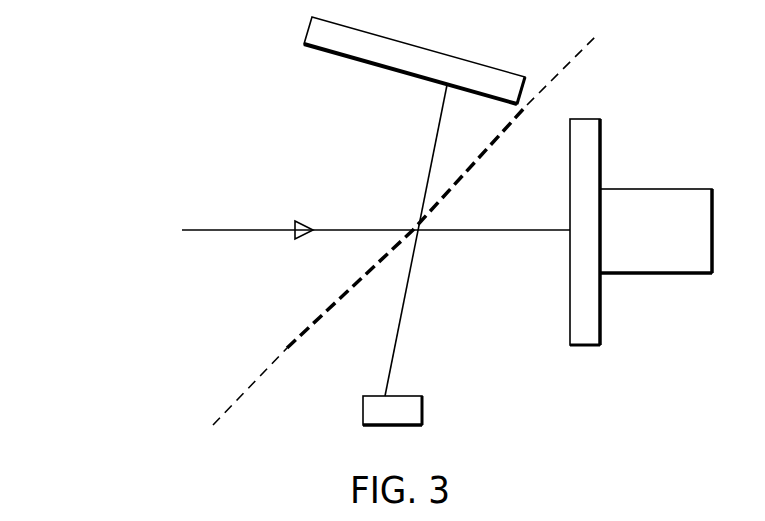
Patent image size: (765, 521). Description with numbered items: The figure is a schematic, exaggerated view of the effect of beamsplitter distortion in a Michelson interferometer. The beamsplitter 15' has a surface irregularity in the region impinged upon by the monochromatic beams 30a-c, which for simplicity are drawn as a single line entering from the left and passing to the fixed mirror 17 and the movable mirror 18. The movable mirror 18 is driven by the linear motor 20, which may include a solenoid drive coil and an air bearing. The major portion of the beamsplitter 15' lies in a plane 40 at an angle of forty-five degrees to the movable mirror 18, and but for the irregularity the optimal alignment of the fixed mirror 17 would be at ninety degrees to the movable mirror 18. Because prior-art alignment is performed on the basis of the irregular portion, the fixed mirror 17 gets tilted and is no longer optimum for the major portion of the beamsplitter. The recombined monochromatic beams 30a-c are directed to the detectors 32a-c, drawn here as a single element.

The beamsplitter 15' is at (411, 226).
The fixed mirror 17 is at (307, 33).
The movable mirror 18 is at (585, 118).
The linear motor 20 is at (672, 190).
The monochromatic beams 30a-c is at (247, 229).
The detectors 32a-c is at (434, 412).
The plane 40 is at (590, 50).